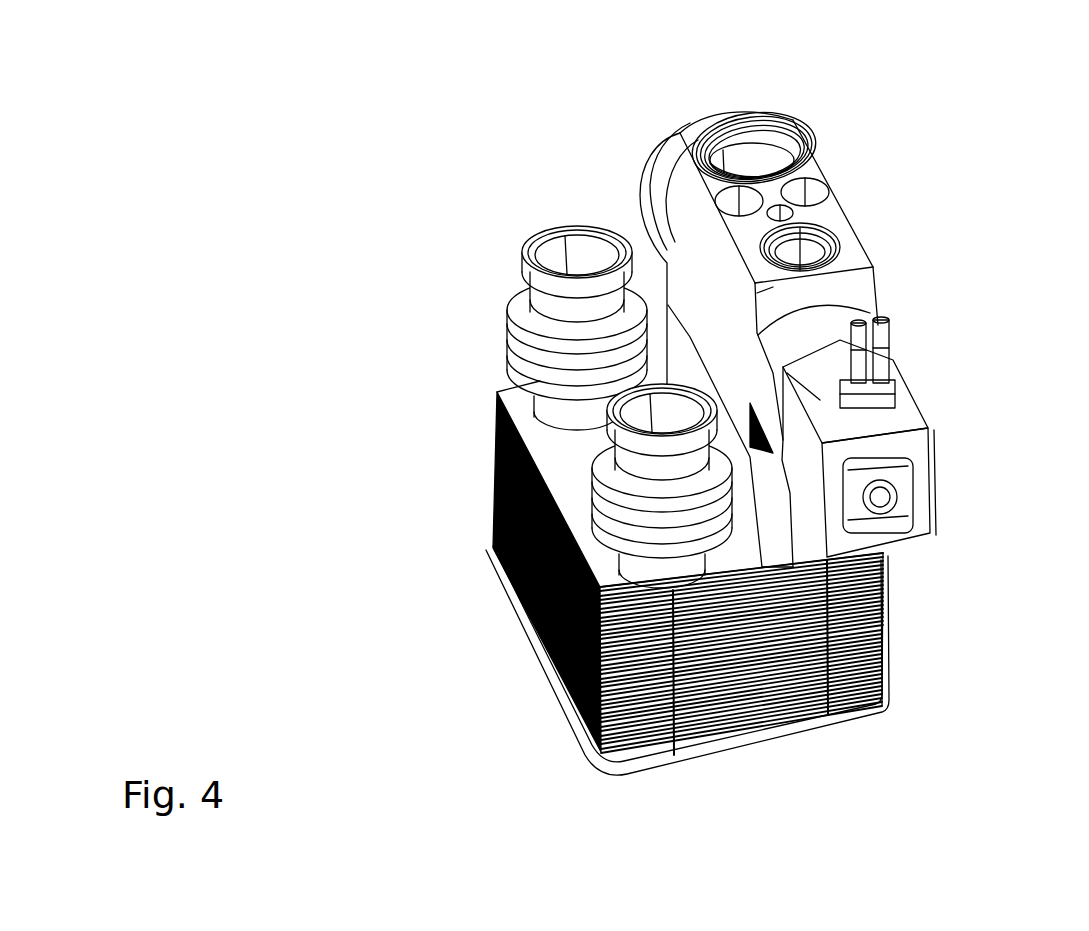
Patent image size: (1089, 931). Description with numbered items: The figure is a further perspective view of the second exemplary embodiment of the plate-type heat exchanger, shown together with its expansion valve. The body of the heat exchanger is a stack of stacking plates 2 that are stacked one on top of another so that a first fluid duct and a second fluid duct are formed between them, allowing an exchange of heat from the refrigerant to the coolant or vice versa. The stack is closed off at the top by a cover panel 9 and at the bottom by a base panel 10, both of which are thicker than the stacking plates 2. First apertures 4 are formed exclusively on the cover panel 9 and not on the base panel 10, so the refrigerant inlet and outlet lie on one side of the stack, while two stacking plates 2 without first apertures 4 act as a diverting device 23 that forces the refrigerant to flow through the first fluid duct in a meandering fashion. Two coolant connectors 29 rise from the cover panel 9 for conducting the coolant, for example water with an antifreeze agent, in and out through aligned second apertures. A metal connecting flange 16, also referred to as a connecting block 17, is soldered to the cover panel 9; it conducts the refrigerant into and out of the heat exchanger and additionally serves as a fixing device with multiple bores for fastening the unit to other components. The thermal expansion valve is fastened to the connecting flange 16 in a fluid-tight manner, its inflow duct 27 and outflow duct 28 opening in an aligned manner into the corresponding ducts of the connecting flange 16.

The stacking plates 2 is at (497, 463).
The first apertures 4 is at (473, 510).
The cover panel 9 is at (637, 468).
The base panel 10 is at (770, 747).
The connecting flange 16 is at (783, 530).
The connecting block 17 is at (949, 414).
The diverting device 23 is at (800, 298).
The inflow duct 27 is at (813, 247).
The outflow duct 28 is at (763, 156).
The coolant connectors 29 is at (523, 322).